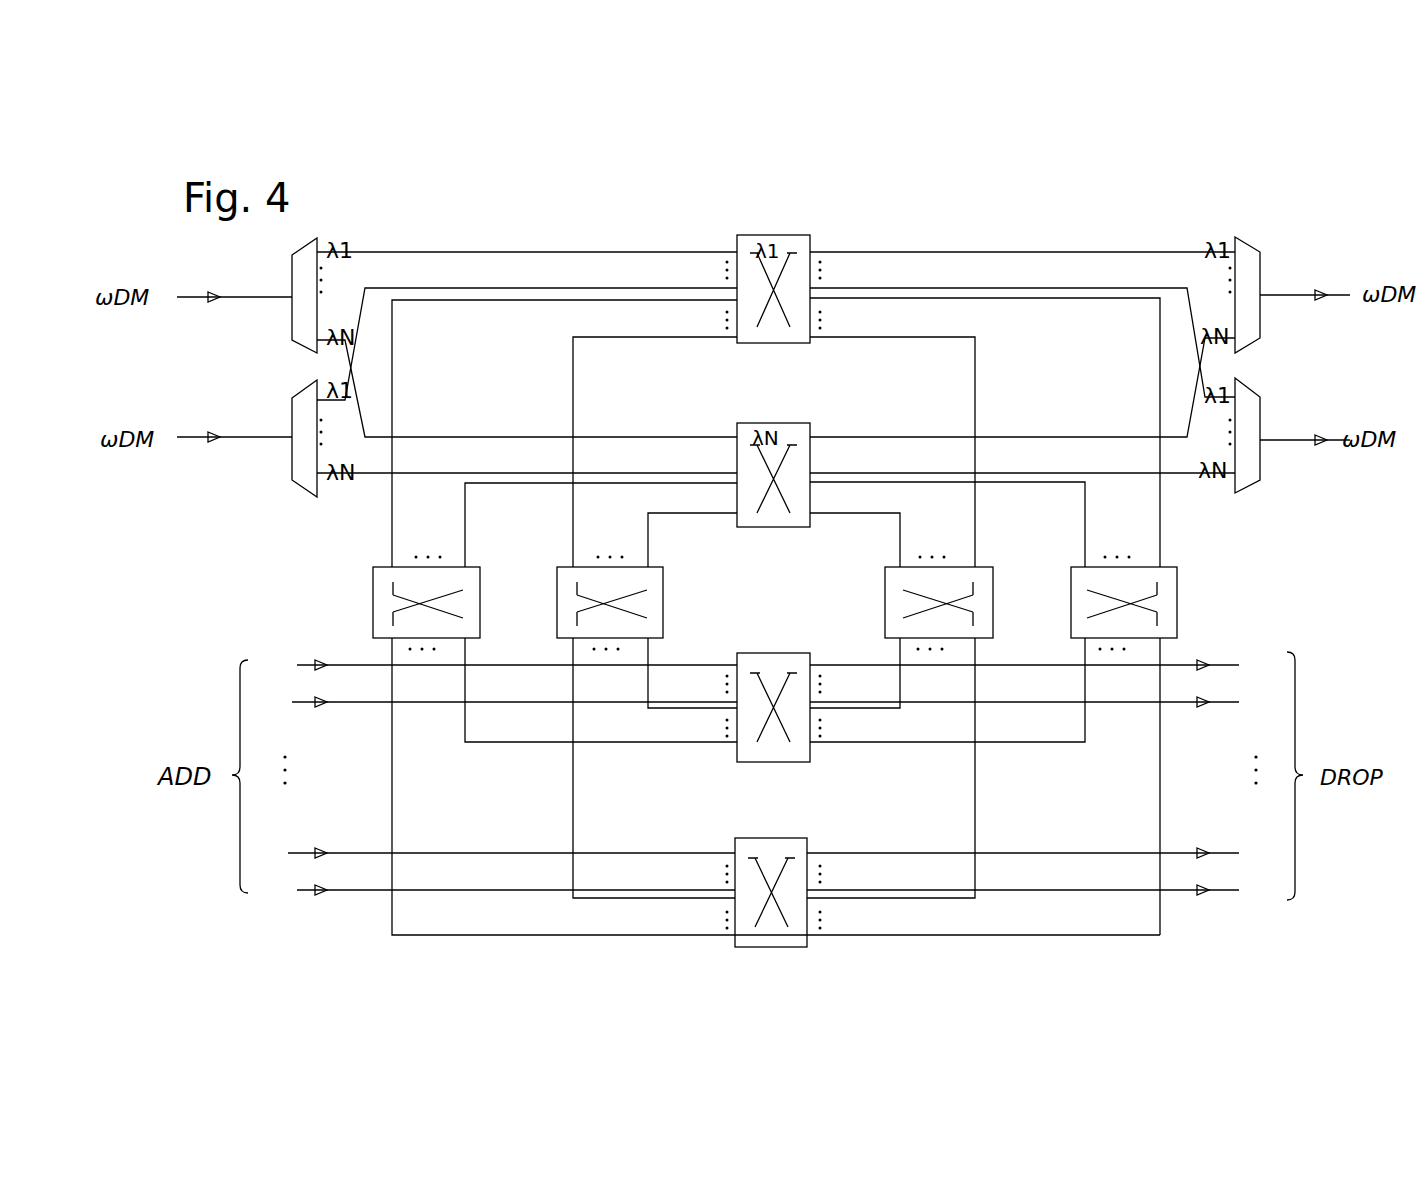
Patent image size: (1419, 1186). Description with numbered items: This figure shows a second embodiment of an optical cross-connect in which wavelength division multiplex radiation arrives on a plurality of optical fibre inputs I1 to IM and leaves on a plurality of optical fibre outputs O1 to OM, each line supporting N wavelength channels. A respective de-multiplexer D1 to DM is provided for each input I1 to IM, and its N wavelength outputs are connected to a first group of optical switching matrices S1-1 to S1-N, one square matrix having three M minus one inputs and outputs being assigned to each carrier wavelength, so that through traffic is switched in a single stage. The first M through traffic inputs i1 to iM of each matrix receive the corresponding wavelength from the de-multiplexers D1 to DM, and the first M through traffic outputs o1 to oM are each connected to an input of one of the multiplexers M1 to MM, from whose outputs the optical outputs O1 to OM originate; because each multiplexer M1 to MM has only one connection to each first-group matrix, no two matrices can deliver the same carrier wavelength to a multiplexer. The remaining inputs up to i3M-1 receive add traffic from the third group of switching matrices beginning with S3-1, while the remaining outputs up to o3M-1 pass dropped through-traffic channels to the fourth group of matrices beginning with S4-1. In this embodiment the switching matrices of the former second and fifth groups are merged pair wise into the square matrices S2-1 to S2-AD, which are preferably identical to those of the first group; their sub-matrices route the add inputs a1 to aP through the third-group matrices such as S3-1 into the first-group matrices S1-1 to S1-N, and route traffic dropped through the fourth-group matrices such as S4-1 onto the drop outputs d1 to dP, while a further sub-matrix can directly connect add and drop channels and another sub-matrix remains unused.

The de-multiplexer D1 is at (302, 258).
The de-multiplexer DM is at (304, 483).
The multiplexer M1 is at (1252, 252).
The multiplexer MM is at (1262, 480).
The optical fibre input I1 is at (290, 297).
The optical fibre input IM is at (290, 440).
The optical fibre output O1 is at (1283, 295).
The optical fibre output OM is at (1282, 440).
The through traffic input i1 is at (674, 256).
The through traffic input iM is at (676, 290).
The switching matrix input i3M-1 is at (665, 340).
The through traffic output o1 is at (868, 256).
The through traffic output oM is at (894, 292).
The switching matrix output o3M-1 is at (891, 617).
The optical switching matrix S1-1 is at (802, 242).
The optical switching matrix S1-N is at (806, 428).
The optical switching matrix S2-1 is at (745, 758).
The optical switching matrix S2-AD is at (786, 842).
The optical switching matrix S3-1 is at (373, 608).
The optical switching matrix S4-1 is at (1168, 612).
The add input a1 is at (507, 666).
The add input aP is at (506, 890).
The drop output d1 is at (1044, 666).
The drop output dP is at (1042, 890).